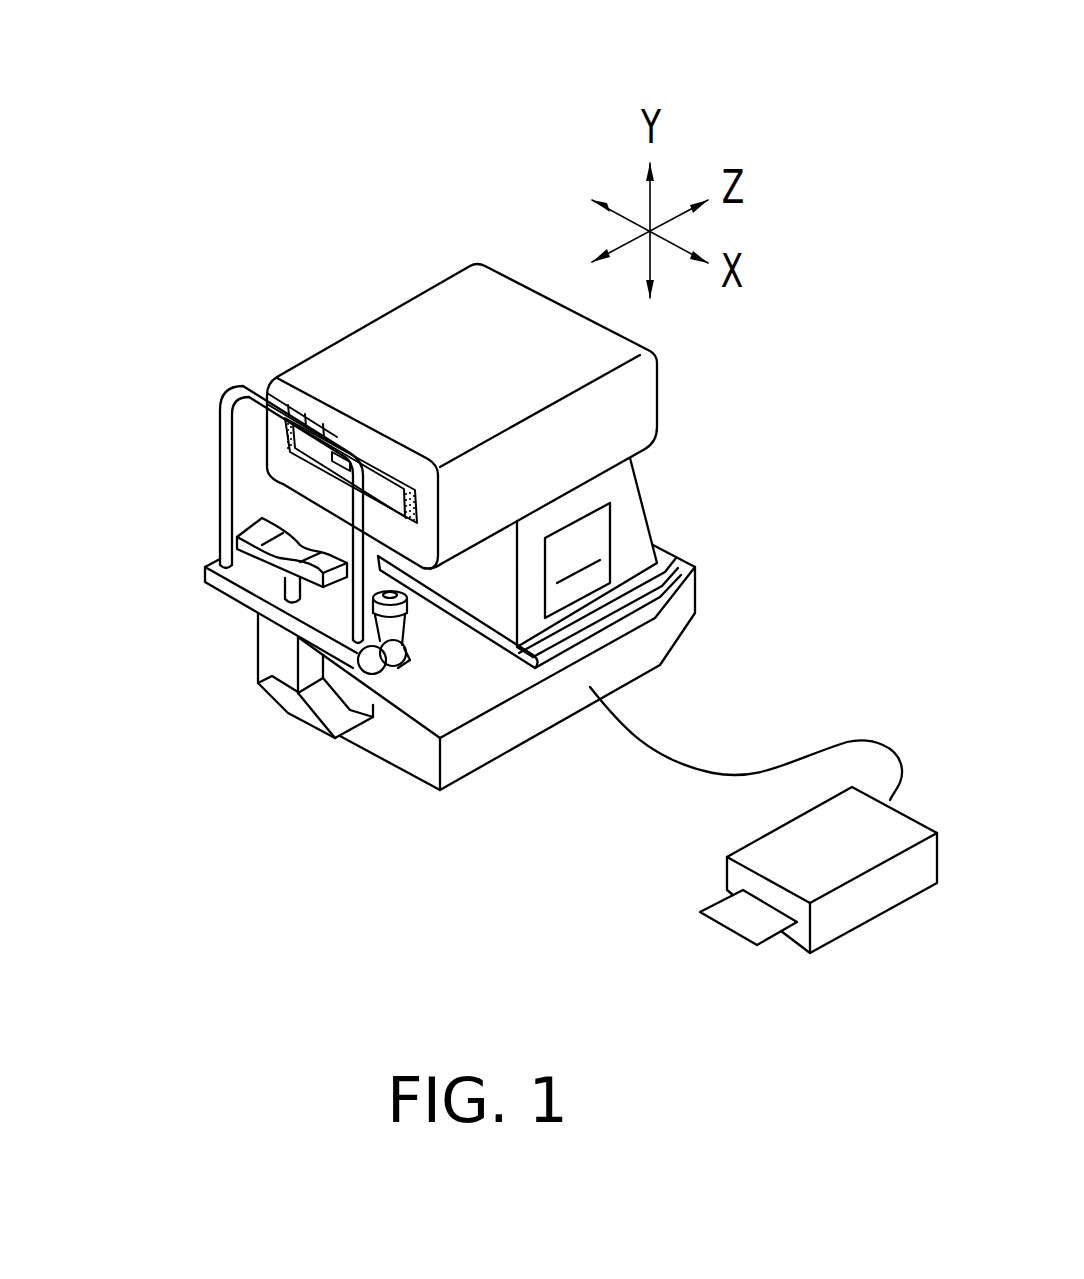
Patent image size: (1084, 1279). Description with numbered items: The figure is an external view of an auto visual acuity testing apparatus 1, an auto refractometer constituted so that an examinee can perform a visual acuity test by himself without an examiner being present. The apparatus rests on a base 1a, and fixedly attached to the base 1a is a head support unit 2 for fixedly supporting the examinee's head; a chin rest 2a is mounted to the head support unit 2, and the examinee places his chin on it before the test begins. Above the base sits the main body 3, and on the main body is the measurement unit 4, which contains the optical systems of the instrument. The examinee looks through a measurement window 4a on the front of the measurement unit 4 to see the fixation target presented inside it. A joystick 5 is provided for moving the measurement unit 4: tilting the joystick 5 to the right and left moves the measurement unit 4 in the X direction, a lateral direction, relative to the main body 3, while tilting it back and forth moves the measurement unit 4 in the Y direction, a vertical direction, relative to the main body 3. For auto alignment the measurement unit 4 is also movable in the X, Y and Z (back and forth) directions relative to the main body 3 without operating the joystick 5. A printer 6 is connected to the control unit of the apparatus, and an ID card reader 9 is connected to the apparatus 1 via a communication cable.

The auto visual acuity testing apparatus 1 is at (440, 118).
The base 1a is at (677, 618).
The head support unit 2 is at (226, 626).
The chin rest 2a is at (253, 530).
The main body 3 is at (473, 590).
The measurement unit 4 is at (422, 333).
The measurement window 4a is at (345, 467).
The joystick 5 is at (400, 620).
The printer 6 is at (595, 547).
The ID card reader 9 is at (870, 895).